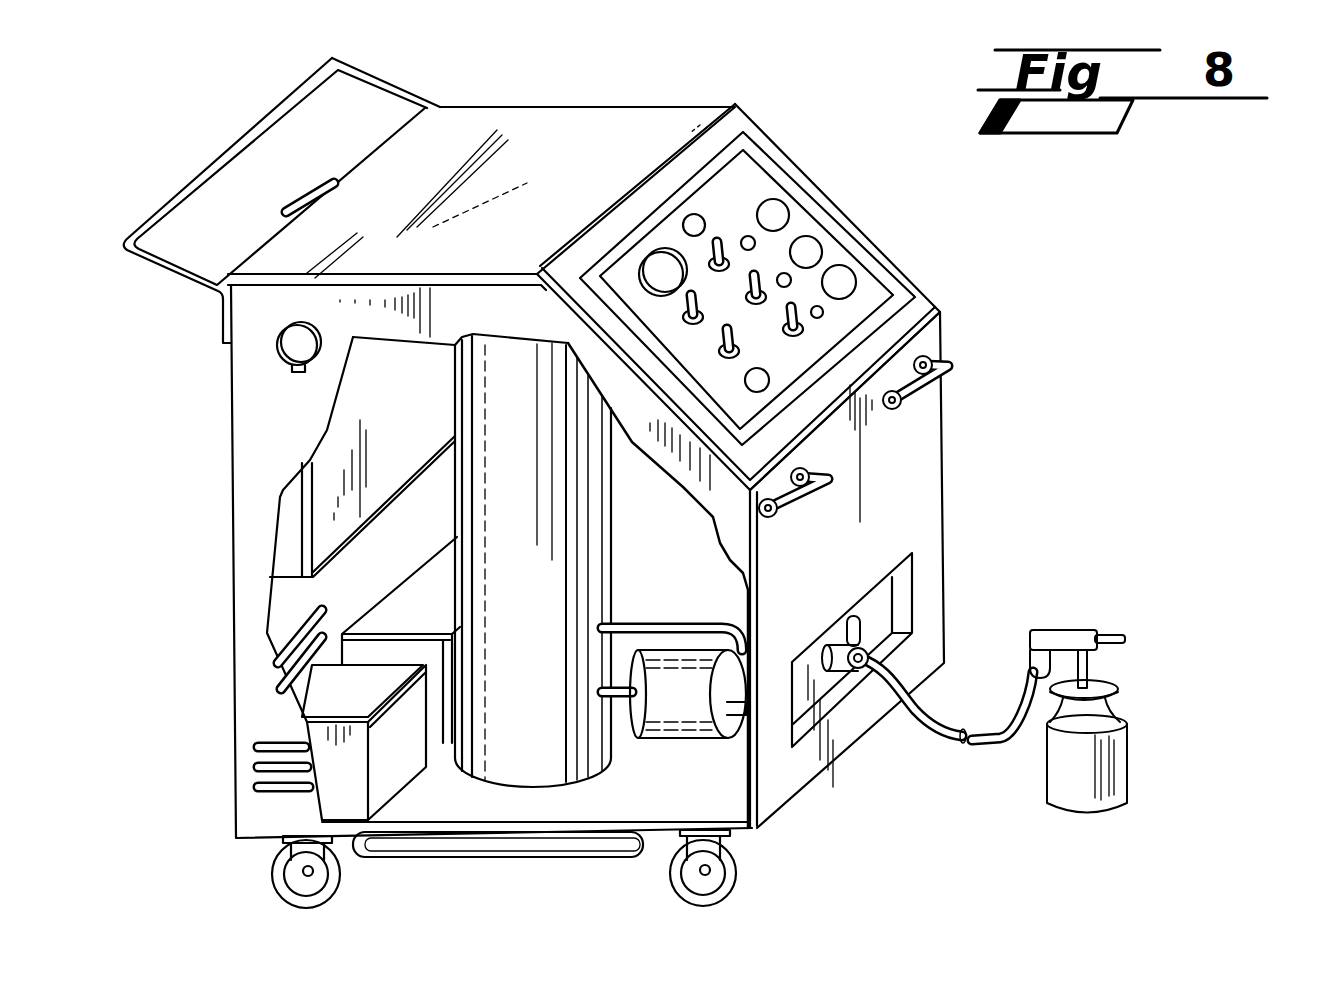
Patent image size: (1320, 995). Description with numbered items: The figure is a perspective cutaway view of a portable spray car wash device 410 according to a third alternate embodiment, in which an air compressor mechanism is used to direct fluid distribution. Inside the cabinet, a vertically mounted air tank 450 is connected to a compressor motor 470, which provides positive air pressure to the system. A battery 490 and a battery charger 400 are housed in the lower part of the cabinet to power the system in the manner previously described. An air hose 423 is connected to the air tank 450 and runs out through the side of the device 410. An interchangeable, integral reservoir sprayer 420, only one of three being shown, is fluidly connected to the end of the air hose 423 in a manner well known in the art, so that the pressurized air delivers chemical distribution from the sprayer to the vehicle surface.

The device 410 is at (1005, 233).
The battery charger 400 is at (447, 627).
The air tank 450 is at (545, 613).
The compressor motor 470 is at (638, 700).
The battery 490 is at (318, 700).
The reservoir sprayer 420 is at (1127, 755).
The air hose 423 is at (950, 741).